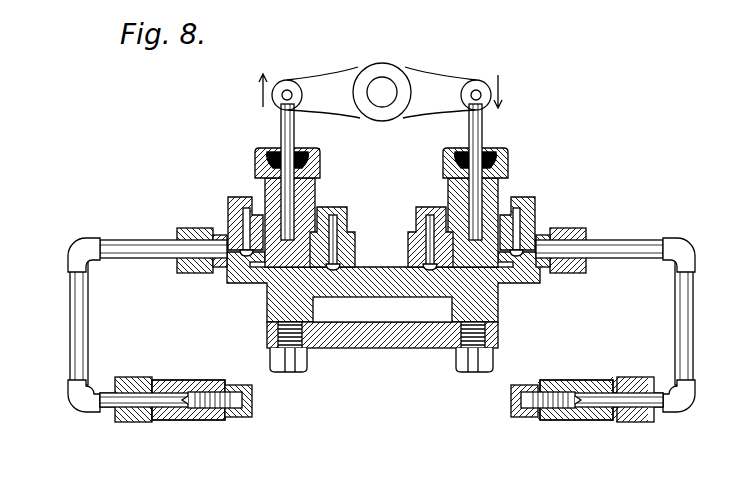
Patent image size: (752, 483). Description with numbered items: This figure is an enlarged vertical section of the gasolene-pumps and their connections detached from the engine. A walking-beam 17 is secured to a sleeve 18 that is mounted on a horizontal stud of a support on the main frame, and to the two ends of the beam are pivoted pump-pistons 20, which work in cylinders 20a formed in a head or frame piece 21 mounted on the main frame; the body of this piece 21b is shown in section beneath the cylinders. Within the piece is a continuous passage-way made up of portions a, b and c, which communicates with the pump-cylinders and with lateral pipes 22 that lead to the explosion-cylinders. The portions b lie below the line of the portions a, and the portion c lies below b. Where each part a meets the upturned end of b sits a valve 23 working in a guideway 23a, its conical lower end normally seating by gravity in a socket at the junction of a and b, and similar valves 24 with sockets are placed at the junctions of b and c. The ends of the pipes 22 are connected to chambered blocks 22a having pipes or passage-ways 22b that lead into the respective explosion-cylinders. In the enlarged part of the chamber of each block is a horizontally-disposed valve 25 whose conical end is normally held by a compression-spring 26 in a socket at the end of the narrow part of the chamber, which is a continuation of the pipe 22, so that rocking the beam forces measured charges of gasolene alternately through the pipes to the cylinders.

The walking-beam 17 is at (444, 84).
The sleeve 18 is at (388, 70).
The pump-piston 20 is at (282, 121).
The cylinder 20a is at (312, 192).
The head or frame piece 21 is at (258, 180).
The valve body 21b is at (383, 300).
The lateral pipe 22 is at (74, 322).
The chambered block 22a is at (192, 380).
The pipe or passage-way 22b is at (584, 420).
The valve 23 is at (232, 275).
The guideway 23a is at (229, 208).
The valve 24 is at (432, 246).
The valve 25 is at (186, 420).
The compression-spring 26 is at (222, 420).
The passage-way portion a is at (155, 244).
The passage-way portion b is at (272, 270).
The passage-way portion c is at (400, 282).